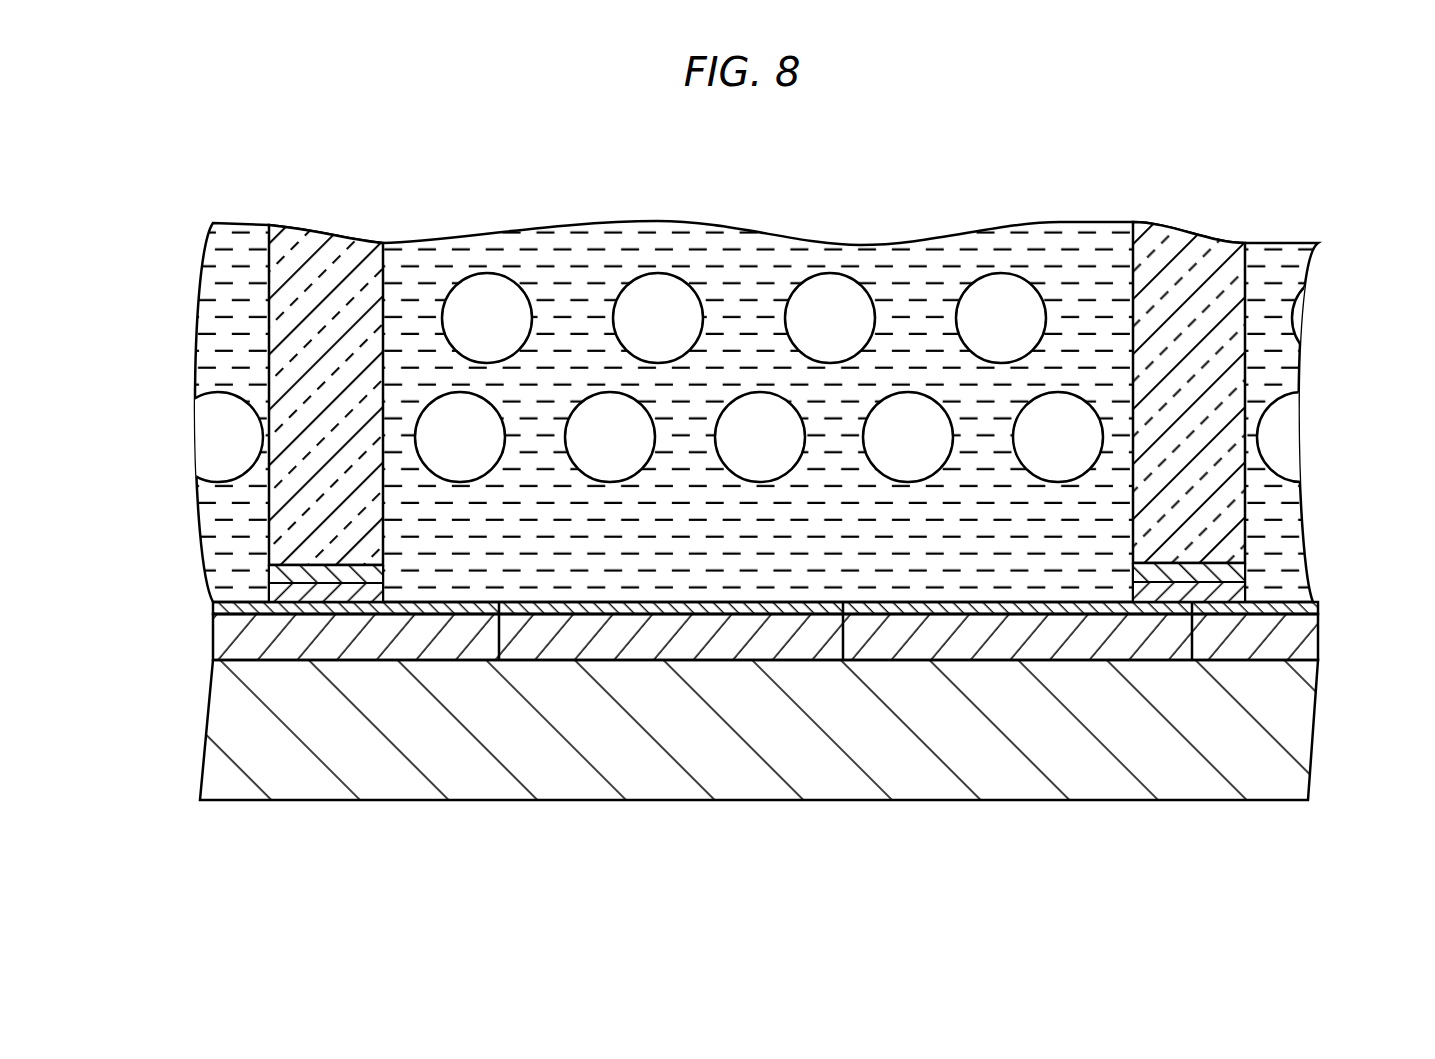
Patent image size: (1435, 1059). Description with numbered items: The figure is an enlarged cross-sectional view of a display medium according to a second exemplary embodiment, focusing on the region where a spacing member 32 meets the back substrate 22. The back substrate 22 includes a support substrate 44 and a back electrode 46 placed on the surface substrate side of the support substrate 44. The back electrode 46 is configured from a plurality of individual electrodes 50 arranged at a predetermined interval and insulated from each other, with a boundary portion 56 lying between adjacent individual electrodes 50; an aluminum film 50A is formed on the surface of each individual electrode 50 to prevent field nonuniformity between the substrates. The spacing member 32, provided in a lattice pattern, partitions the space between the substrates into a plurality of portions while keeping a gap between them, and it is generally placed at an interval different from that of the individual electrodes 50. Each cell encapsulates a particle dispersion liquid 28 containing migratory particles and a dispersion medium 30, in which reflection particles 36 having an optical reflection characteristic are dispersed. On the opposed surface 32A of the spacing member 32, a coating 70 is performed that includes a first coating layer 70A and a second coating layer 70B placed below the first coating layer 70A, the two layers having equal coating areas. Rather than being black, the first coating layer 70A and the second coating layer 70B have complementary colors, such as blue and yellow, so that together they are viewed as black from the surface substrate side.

The back substrate 22 is at (700, 701).
The particle dispersion liquid 28 is at (588, 258).
The dispersion medium 30 is at (752, 376).
The spacing member 32 is at (370, 284).
The opposed surface 32A is at (333, 565).
The reflection particles 36 is at (819, 308).
The support substrate 44 is at (248, 727).
The back electrode 46 is at (206, 640).
The individual electrodes 50 is at (335, 655).
The aluminum film 50A is at (405, 615).
The boundary portion 56 is at (502, 597).
The coating 70 is at (754, 555).
The first coating layer 70A is at (273, 568).
The second coating layer 70B is at (272, 590).